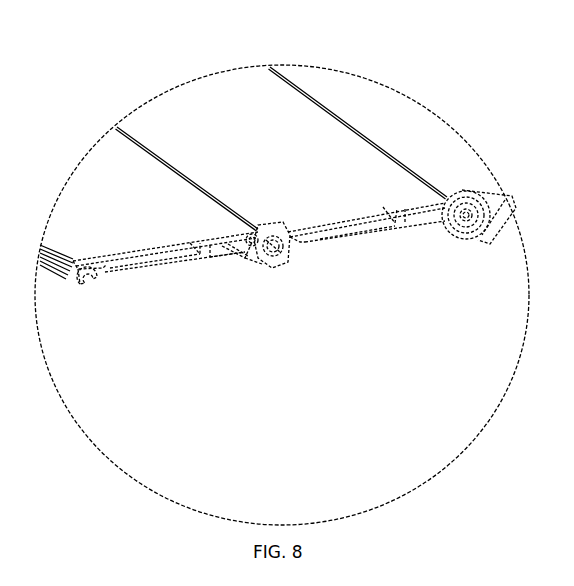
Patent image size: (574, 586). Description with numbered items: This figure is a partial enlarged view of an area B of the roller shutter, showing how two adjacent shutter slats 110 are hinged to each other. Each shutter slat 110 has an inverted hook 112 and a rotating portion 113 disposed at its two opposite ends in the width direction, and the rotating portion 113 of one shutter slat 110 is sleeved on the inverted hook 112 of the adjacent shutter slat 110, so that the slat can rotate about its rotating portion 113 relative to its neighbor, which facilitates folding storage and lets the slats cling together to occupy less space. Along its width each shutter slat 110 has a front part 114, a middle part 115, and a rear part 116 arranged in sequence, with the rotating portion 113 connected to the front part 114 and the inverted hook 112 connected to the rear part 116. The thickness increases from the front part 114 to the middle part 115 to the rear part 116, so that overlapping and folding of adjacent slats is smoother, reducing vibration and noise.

The shutter slat 110 is at (222, 105).
The inverted hook 112 is at (284, 262).
The rotating portion 113 is at (278, 234).
The front part 114 is at (100, 274).
The middle part 115 is at (155, 265).
The rear part 116 is at (234, 260).
The area B is at (444, 118).